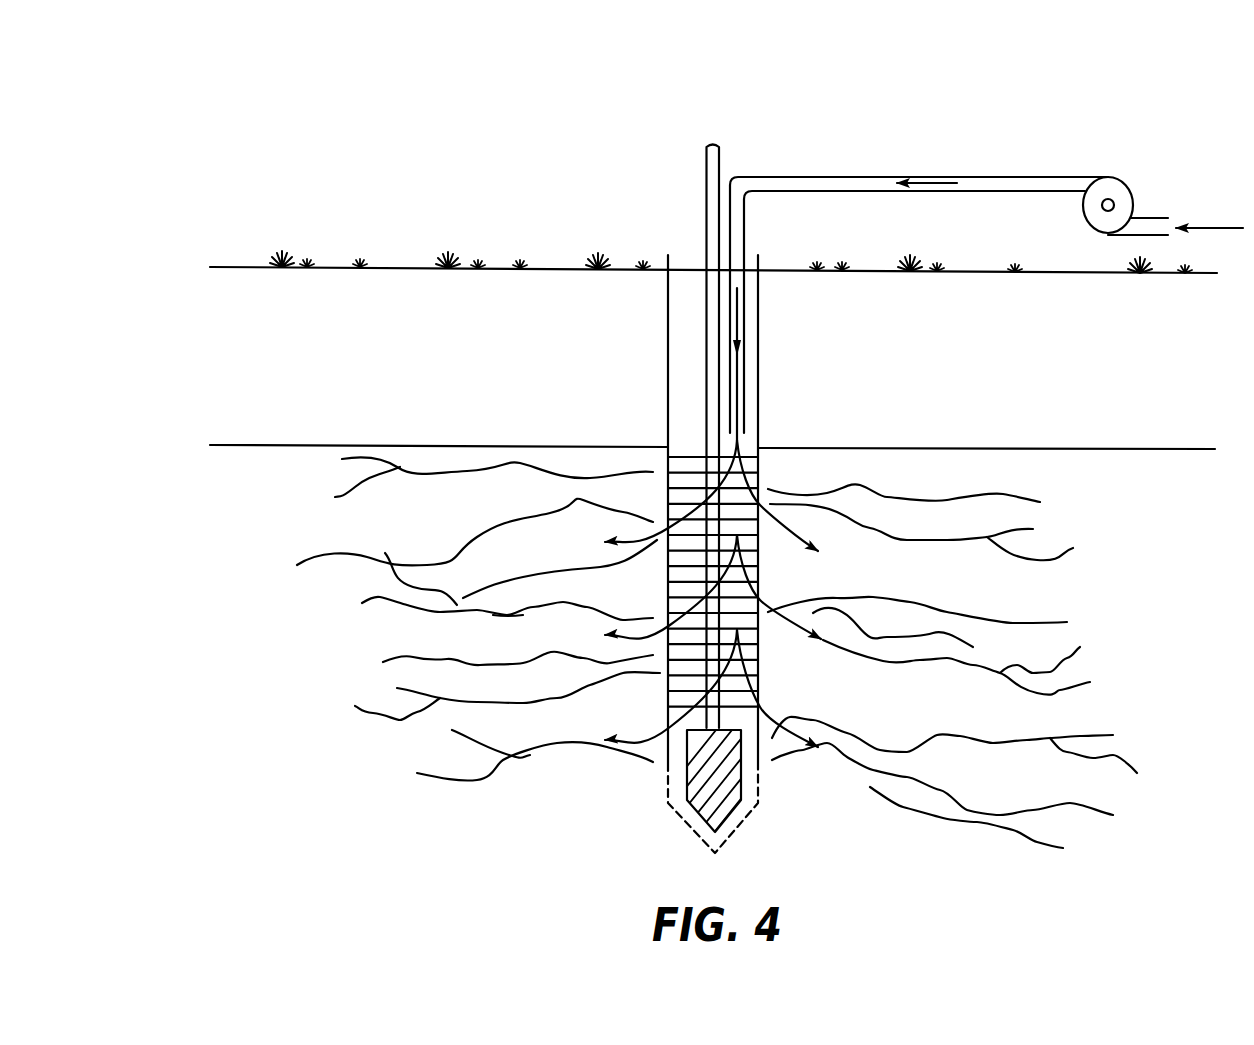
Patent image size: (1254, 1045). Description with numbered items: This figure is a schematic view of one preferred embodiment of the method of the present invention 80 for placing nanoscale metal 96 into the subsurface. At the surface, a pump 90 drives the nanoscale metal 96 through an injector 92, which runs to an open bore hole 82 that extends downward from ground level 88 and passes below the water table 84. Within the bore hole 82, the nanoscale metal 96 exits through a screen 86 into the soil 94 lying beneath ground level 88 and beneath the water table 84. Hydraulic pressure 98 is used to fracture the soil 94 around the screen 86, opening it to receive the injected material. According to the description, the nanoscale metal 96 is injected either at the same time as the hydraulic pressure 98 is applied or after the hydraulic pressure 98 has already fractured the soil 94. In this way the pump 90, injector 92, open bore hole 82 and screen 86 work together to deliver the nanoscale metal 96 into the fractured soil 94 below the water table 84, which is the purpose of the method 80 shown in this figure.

The method of the present invention 80 is at (490, 135).
The open bore hole 82 is at (760, 367).
The water table 84 is at (229, 443).
The screen 86 is at (677, 465).
The ground level 88 is at (228, 265).
The pump 90 is at (1125, 193).
The injector 92 is at (1023, 182).
The soil 94 is at (1068, 548).
The nanoscale metal 96 is at (623, 740).
The hydraulic pressure 98 is at (728, 807).